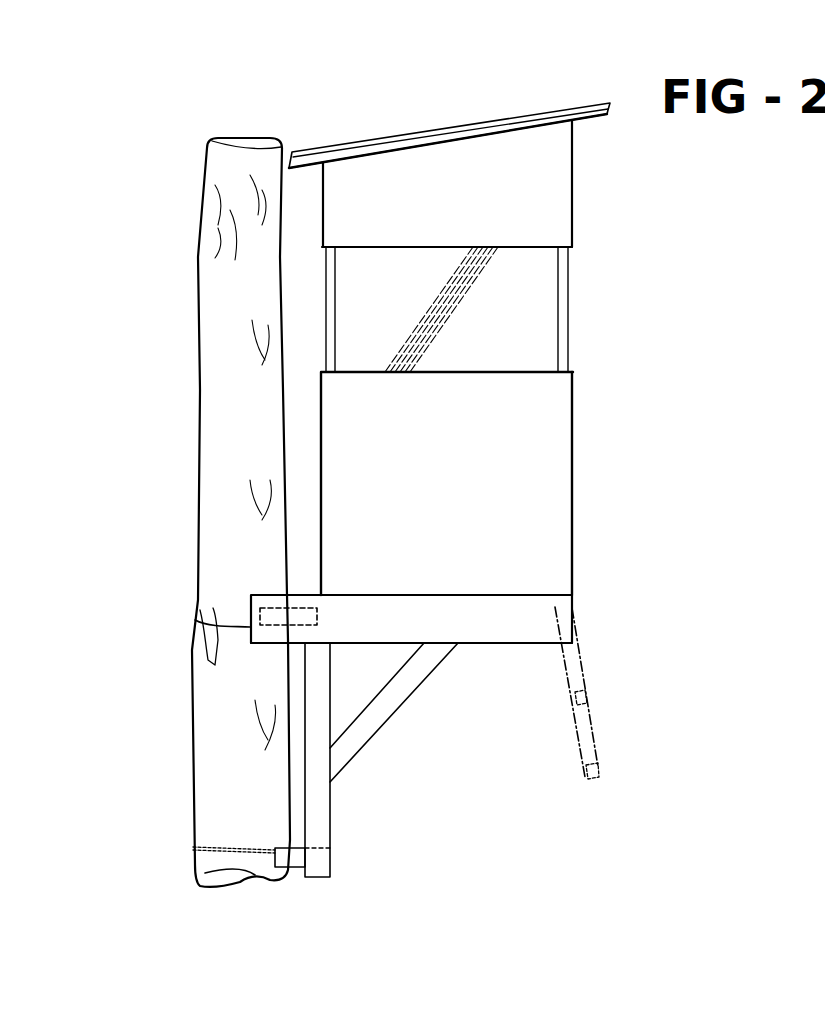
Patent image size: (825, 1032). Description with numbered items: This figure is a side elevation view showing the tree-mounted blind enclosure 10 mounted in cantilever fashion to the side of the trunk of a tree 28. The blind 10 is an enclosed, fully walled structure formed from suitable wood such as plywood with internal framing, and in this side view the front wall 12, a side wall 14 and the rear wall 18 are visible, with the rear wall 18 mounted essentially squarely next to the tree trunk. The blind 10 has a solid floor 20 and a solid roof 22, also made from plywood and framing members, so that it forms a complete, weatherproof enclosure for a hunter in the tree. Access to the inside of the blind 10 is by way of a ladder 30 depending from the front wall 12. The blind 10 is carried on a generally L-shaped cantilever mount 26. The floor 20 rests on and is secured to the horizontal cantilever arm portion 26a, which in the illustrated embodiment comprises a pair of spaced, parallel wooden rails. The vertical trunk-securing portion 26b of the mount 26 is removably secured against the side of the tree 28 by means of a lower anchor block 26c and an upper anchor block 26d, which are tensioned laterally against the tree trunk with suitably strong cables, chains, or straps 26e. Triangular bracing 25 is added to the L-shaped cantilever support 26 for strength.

The tree-mounted blind enclosure 10 is at (619, 278).
The front wall 12 is at (575, 432).
The side wall 14 is at (545, 527).
The rear wall 18 is at (322, 445).
The floor 20 is at (548, 602).
The roof 22 is at (427, 141).
The triangular bracing 25 is at (393, 692).
The cantilever mount 26 is at (290, 746).
The horizontal cantilever arm portion 26a is at (492, 633).
The vertical trunk-securing portion 26b is at (318, 762).
The lower anchor block 26c is at (295, 857).
The upper anchor block 26d is at (250, 612).
The straps 26e is at (197, 643).
The tree 28 is at (228, 175).
The ladder 30 is at (588, 698).